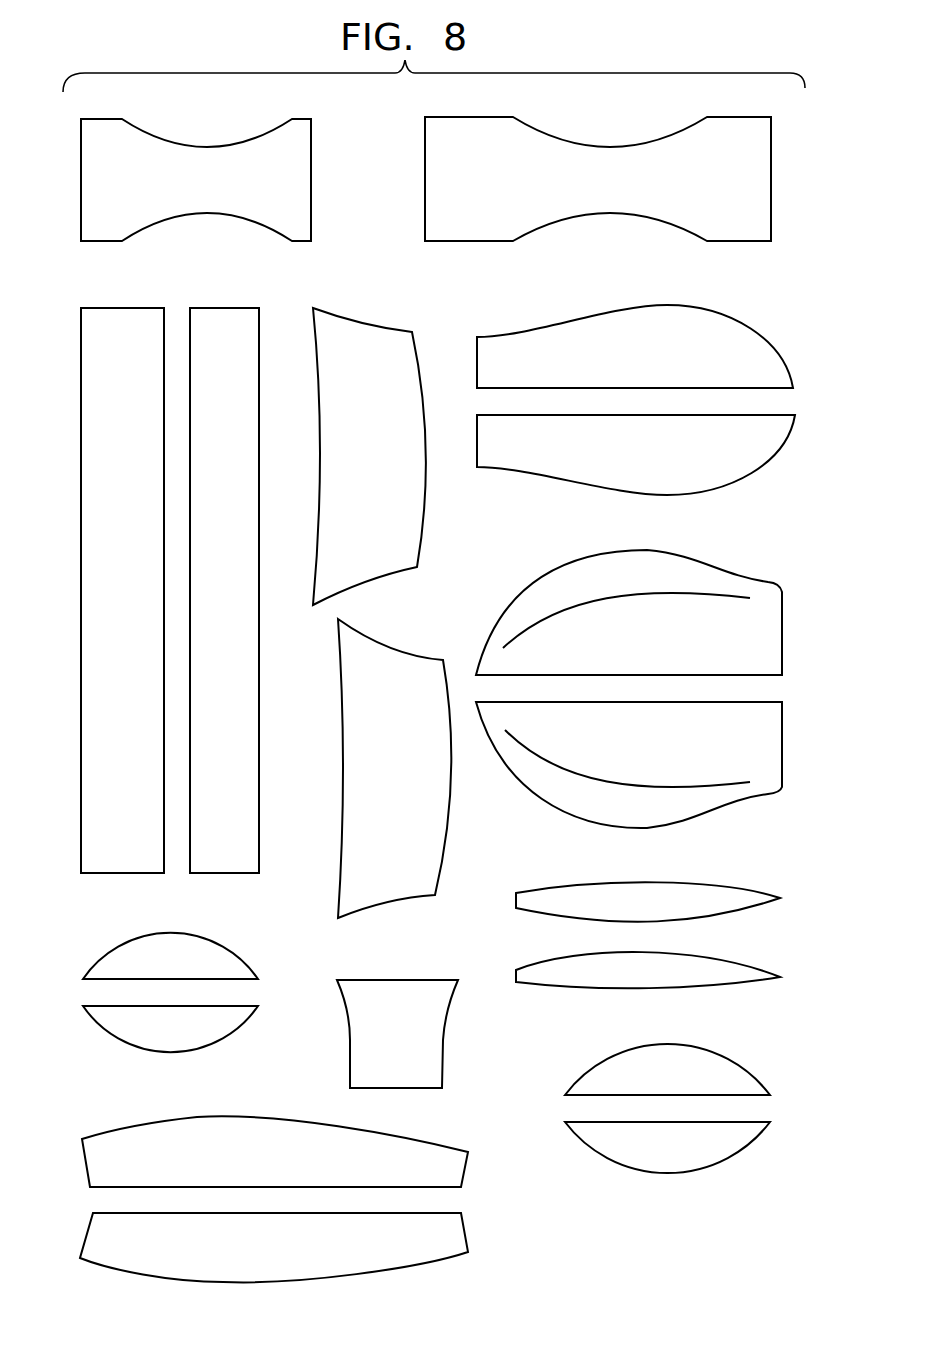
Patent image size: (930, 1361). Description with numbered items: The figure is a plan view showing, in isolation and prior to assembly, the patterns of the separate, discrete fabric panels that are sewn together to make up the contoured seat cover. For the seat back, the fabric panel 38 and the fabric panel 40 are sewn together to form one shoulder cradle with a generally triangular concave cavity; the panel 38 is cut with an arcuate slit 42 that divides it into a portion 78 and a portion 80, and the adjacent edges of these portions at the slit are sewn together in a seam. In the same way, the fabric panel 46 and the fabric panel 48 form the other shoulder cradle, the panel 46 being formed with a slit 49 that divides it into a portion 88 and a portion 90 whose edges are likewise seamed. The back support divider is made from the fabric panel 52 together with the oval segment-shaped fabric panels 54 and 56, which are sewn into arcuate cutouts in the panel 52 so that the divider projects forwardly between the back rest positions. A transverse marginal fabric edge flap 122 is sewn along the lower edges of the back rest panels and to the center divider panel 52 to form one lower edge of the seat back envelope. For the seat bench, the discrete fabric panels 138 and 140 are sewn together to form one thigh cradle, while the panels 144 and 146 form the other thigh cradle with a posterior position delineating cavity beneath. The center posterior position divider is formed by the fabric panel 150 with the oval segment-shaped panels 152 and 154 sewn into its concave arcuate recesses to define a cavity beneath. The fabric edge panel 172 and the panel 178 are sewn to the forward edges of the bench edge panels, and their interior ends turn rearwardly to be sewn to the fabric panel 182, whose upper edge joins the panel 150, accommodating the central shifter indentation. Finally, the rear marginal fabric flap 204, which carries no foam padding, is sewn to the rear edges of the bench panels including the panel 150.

The fabric panel 150 is at (175, 200).
The fabric panel 52 is at (558, 197).
The transverse marginal fabric edge flap 122 is at (134, 622).
The rear marginal fabric flap 204 is at (246, 622).
The fabric panel 178 is at (386, 434).
The fabric edge panel 172 is at (404, 815).
The discrete fabric panel 144 is at (690, 327).
The discrete fabric panel 138 is at (691, 472).
The fabric panel 38 is at (653, 598).
The arcuate slit 42 is at (687, 590).
The portion 80 is at (615, 589).
The portion 78 is at (646, 647).
The fabric panel 46 is at (653, 770).
The slit 49 is at (698, 790).
The portion 88 is at (649, 744).
The portion 90 is at (616, 819).
The discrete fabric panel 146 is at (717, 900).
The discrete fabric panel 140 is at (710, 973).
The oval segment-shaped panel 152 is at (737, 1084).
The oval segment-shaped panel 154 is at (722, 1147).
The oval segment-shaped fabric panel 56 is at (207, 958).
The oval segment-shaped fabric panel 54 is at (183, 1033).
The fabric panel 182 is at (413, 1039).
The fabric panel 40 is at (122, 1125).
The fabric panel 48 is at (360, 1257).